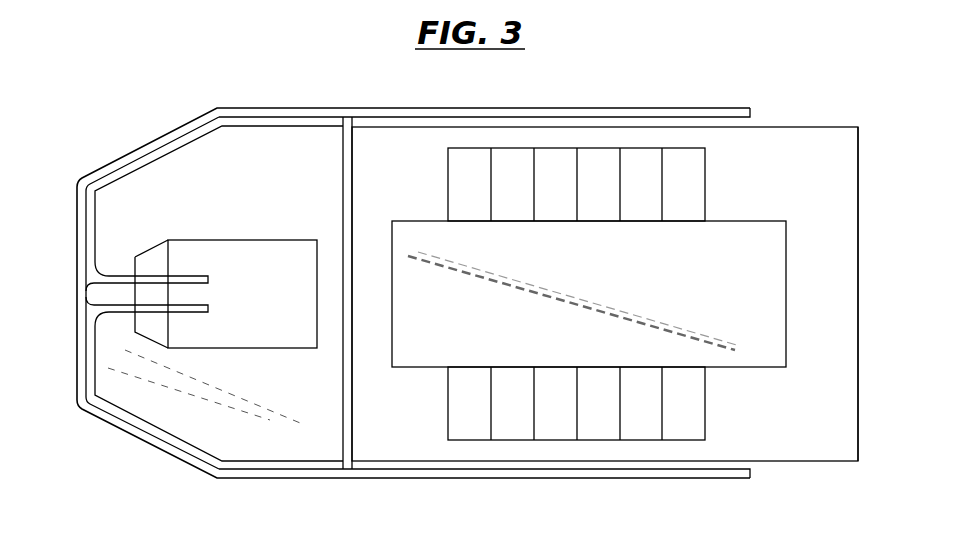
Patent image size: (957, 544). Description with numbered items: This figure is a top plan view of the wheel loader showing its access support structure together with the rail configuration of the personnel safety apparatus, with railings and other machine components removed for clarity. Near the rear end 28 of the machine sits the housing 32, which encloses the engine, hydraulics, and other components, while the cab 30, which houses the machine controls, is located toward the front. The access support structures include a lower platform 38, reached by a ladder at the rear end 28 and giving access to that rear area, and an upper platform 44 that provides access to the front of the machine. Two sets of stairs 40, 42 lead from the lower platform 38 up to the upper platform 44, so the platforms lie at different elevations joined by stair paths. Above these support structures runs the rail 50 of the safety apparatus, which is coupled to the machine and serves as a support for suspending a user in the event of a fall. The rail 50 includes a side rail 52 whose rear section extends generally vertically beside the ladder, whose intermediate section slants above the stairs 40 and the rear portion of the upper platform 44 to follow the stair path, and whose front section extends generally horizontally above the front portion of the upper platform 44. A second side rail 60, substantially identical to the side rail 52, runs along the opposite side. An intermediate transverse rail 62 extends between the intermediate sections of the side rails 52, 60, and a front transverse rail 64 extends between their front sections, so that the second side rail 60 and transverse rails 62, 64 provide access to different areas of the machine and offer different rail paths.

The rear end 28 is at (858, 420).
The cab 30 is at (258, 258).
The housing 32 is at (760, 257).
The lower platform 38 is at (801, 156).
The stairs 40 is at (577, 412).
The stairs 42 is at (578, 188).
The upper platform 44 is at (298, 422).
The rail 50 is at (391, 105).
The side rail 52 is at (479, 485).
The second side rail 60 is at (475, 107).
The intermediate transverse rail 62 is at (352, 212).
The front transverse rail 64 is at (83, 290).